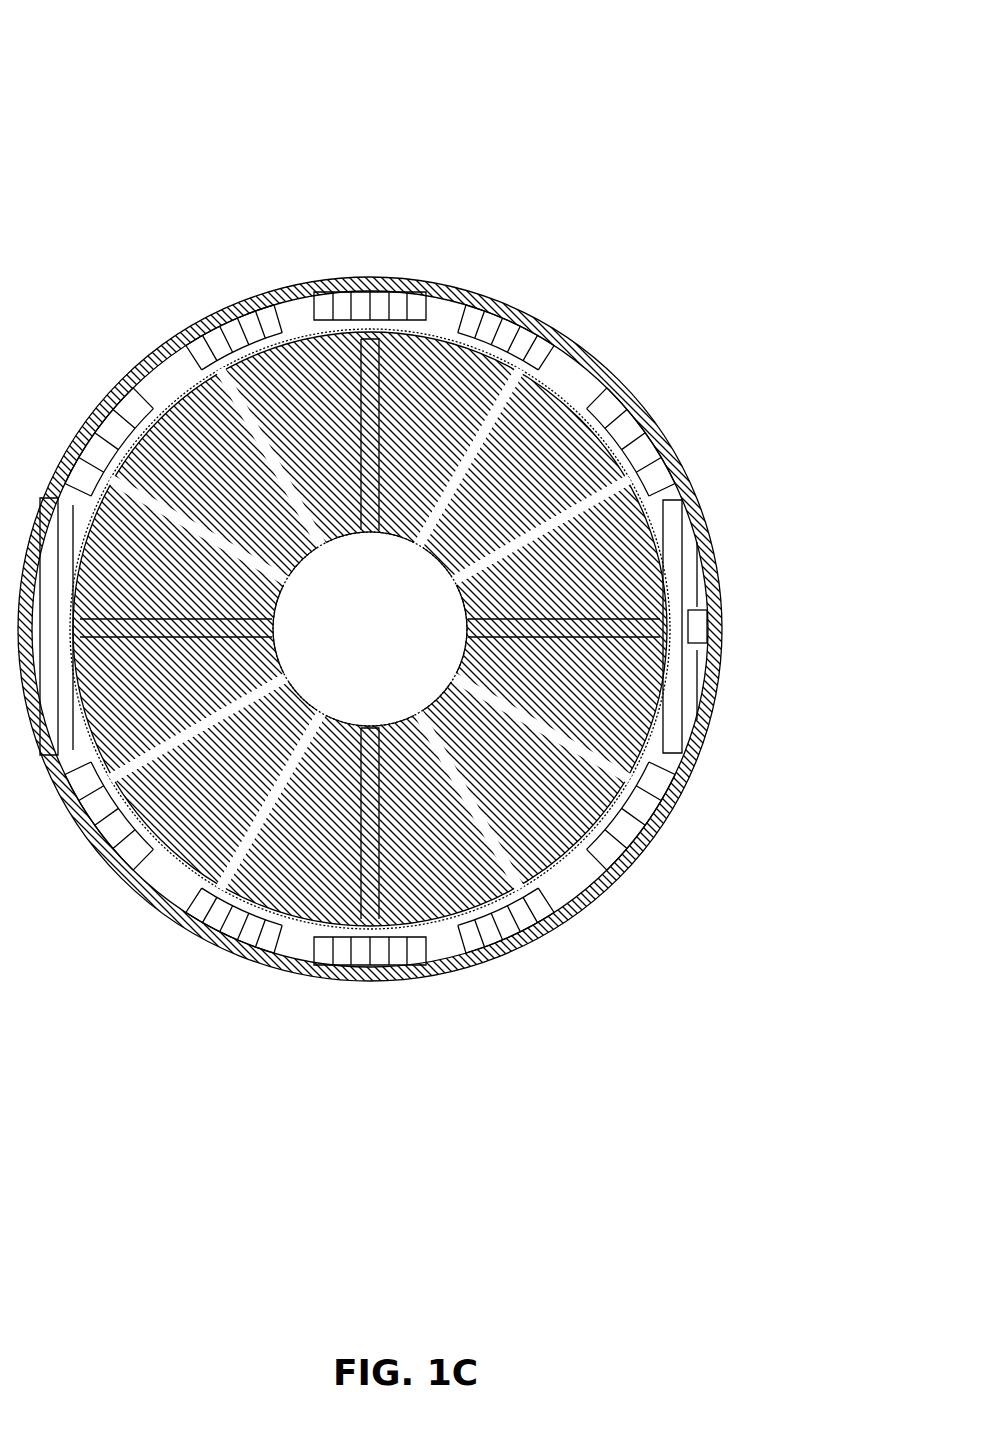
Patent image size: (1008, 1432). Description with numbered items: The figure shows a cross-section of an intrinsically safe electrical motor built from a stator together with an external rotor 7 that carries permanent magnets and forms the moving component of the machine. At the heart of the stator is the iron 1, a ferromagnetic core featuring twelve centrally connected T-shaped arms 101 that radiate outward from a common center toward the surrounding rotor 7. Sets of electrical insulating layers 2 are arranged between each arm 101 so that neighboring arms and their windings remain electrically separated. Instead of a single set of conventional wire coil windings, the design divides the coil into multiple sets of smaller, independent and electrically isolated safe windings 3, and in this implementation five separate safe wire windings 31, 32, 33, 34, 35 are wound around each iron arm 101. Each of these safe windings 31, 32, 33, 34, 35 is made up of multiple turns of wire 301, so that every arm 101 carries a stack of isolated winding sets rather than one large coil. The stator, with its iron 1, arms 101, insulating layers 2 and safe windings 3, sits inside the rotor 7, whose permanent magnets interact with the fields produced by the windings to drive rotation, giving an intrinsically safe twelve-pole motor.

The iron 1 is at (572, 418).
The arm 101 is at (663, 448).
The rotor 7 is at (465, 293).
The safe wire winding 3 is at (677, 817).
The turns of wire 301 is at (660, 663).
The electrical insulating layer 2 is at (562, 880).
The first safe wire winding 31 is at (137, 483).
The second safe wire winding 32 is at (160, 455).
The third safe wire winding 33 is at (182, 430).
The fourth safe wire winding 34 is at (210, 390).
The fifth safe wire winding 35 is at (245, 350).